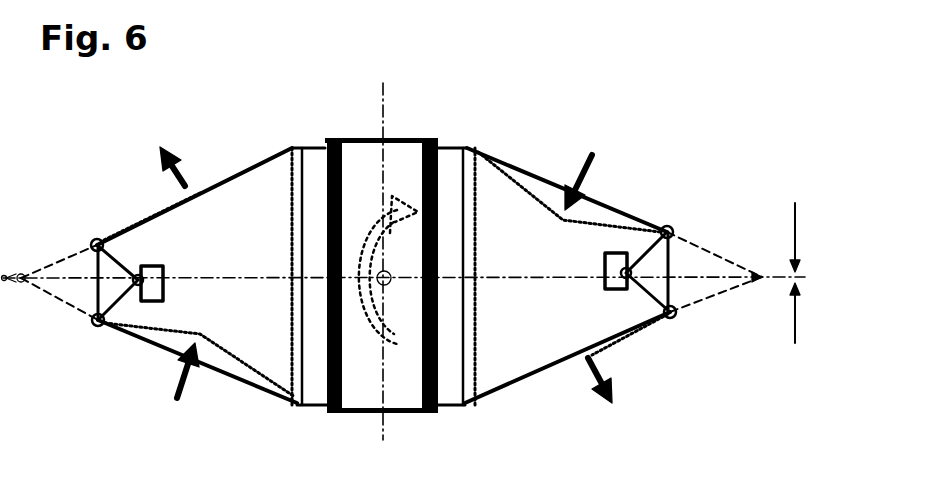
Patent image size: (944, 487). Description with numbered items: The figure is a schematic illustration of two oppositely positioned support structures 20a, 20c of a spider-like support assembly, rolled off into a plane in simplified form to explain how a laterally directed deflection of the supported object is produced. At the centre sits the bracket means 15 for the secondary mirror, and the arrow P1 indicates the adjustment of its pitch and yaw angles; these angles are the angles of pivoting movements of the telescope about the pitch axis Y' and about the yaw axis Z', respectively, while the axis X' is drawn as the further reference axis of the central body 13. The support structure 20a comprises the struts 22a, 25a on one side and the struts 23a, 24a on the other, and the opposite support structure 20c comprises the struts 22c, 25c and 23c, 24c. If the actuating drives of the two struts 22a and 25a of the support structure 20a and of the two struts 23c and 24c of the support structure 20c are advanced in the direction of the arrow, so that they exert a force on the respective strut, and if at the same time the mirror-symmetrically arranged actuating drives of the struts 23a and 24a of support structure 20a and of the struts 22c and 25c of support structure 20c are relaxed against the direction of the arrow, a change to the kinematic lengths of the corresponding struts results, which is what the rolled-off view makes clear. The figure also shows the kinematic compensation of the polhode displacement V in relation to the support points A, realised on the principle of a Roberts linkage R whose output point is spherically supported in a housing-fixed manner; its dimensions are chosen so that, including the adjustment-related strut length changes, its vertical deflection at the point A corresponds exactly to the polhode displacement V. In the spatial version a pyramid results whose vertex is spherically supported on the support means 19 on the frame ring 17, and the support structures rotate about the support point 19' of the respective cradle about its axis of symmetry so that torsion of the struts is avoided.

The central housing 13 is at (370, 378).
The bracket means 15 is at (430, 125).
The frame ring 17 is at (592, 284).
The support means 19 is at (665, 351).
The support point 19' is at (648, 206).
The support structure 20a is at (566, 158).
The support structure 20c is at (108, 200).
The strut 22a is at (613, 193).
The strut 22c is at (243, 170).
The strut 23a is at (627, 340).
The strut 23c is at (232, 380).
The strut 24a is at (538, 377).
The strut 24c is at (145, 352).
The strut 25a is at (528, 167).
The strut 25c is at (137, 220).
The support point A is at (630, 288).
The Roberts linkage R is at (687, 225).
The polhode displacement V is at (786, 271).
The arrow P1 is at (360, 235).
The axis X' is at (370, 230).
The pitch axis Y' is at (404, 239).
The yaw axis Z' is at (448, 316).